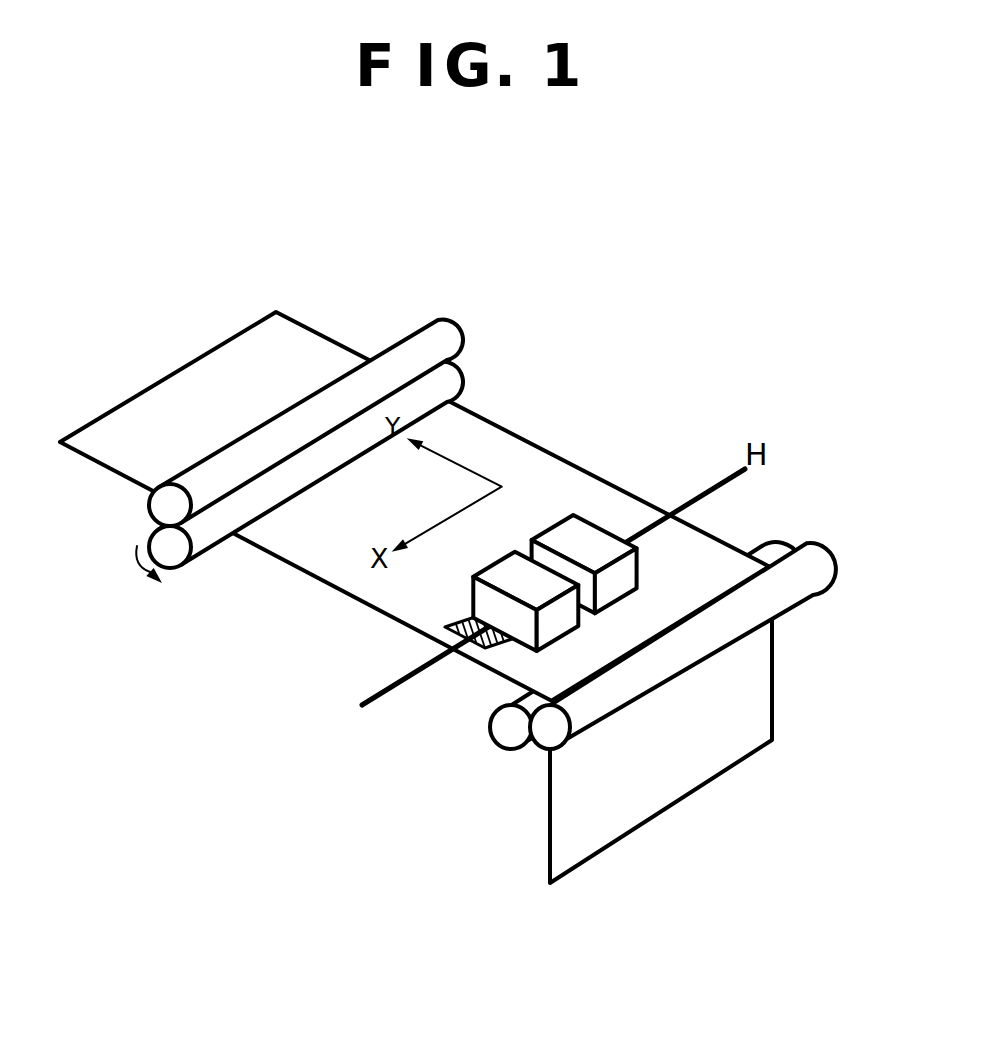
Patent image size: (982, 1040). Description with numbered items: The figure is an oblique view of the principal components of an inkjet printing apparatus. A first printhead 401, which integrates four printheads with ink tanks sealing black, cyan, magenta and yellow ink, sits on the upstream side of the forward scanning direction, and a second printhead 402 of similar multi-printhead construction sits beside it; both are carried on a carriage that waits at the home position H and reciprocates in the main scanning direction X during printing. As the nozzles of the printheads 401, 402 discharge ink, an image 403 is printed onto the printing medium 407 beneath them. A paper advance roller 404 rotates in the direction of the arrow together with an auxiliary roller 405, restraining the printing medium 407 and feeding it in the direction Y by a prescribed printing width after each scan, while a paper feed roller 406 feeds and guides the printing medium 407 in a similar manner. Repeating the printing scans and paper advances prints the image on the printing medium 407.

The first printhead 401 is at (583, 532).
The second printhead 402 is at (480, 602).
The image 403 is at (480, 653).
The paper advance roller 404 is at (172, 552).
The auxiliary roller 405 is at (165, 505).
The paper feed roller 406 is at (817, 557).
The printing medium 407 is at (192, 388).